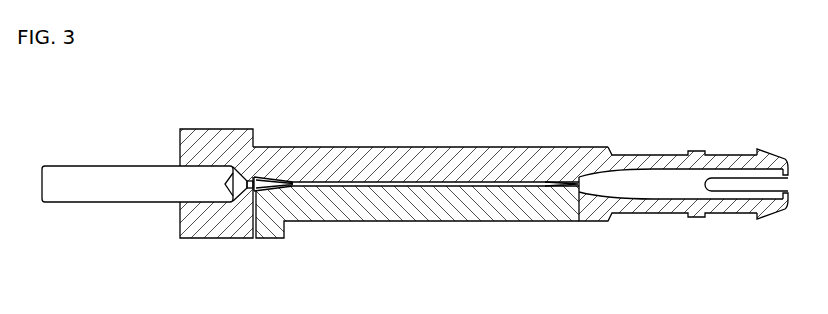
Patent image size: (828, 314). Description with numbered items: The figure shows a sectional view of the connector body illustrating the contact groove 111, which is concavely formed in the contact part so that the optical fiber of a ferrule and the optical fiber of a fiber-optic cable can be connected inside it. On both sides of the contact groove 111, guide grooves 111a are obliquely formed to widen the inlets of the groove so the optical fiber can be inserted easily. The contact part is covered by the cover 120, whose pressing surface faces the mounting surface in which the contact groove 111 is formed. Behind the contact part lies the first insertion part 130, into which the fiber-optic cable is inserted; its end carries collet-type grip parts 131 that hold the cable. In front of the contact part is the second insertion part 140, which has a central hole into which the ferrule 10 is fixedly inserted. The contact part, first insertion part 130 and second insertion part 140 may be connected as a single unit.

The ferrule 10 is at (105, 204).
The second insertion part 140 is at (218, 240).
The contact groove 111 is at (452, 172).
The guide grooves 111a is at (278, 172).
The cover 120 is at (460, 222).
The first insertion part 130 is at (643, 217).
The collet-type grip parts 131 is at (772, 153).